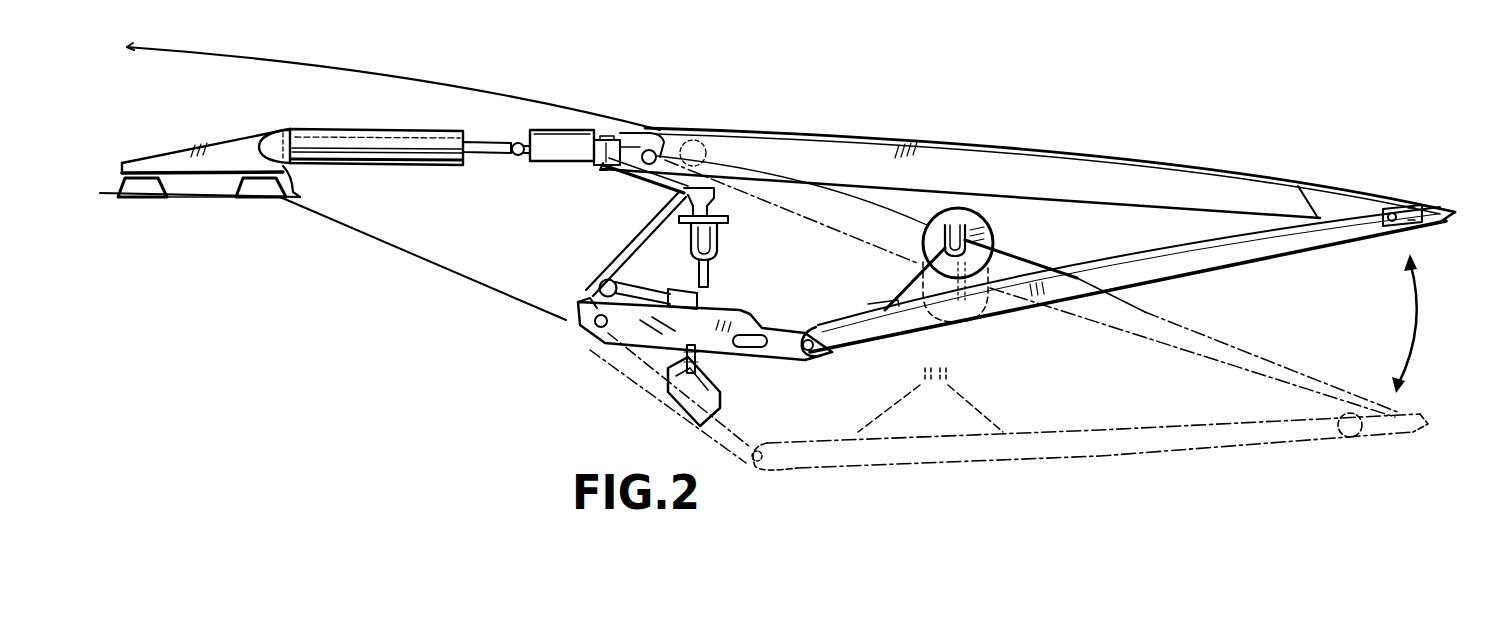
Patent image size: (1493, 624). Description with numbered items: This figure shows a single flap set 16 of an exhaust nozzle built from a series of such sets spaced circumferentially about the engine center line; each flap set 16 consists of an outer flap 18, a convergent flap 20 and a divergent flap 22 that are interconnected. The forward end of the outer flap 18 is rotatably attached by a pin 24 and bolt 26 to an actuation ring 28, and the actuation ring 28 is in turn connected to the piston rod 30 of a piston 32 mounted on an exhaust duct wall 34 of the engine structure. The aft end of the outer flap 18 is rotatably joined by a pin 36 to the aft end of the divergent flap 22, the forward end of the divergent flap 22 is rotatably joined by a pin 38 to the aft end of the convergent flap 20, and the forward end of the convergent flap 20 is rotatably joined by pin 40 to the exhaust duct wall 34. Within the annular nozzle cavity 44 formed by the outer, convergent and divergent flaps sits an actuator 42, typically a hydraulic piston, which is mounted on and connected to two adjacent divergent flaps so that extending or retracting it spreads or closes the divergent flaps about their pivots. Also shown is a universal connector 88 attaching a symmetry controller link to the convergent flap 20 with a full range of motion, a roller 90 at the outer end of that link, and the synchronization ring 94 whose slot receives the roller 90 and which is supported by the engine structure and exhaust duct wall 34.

The flap set 16 is at (983, 110).
The outer flap 18 is at (1050, 165).
The convergent flap 20 is at (713, 307).
The divergent flap 22 is at (1285, 252).
The pin 24 is at (660, 141).
The bolt 26 is at (617, 131).
The actuation ring 28 is at (558, 133).
The piston rod 30 is at (473, 140).
The piston 32 is at (382, 127).
The exhaust duct wall 34 is at (410, 252).
The pin 36 is at (1398, 210).
The pin 38 is at (813, 330).
The pin 40 is at (596, 329).
The actuator 42 is at (993, 222).
The annular nozzle cavity 44 is at (1133, 223).
The universal connector 88 is at (687, 393).
The roller 90 is at (723, 208).
The synchronization ring 94 is at (707, 195).